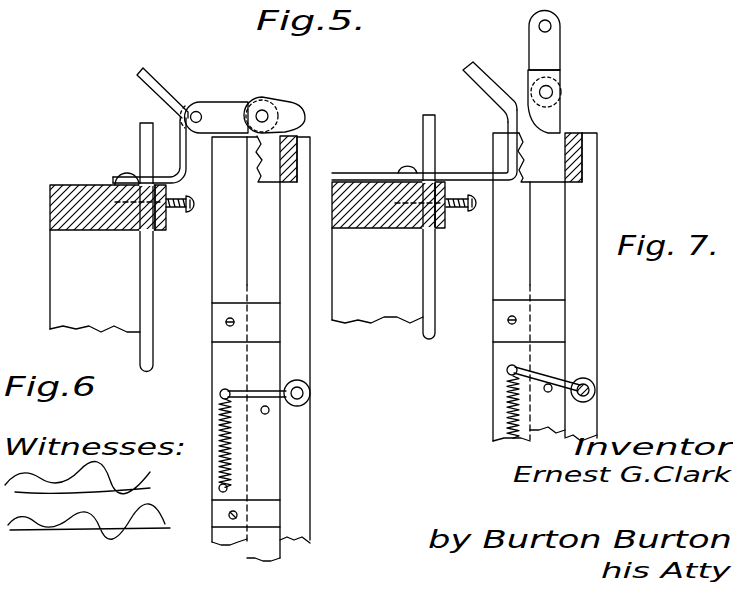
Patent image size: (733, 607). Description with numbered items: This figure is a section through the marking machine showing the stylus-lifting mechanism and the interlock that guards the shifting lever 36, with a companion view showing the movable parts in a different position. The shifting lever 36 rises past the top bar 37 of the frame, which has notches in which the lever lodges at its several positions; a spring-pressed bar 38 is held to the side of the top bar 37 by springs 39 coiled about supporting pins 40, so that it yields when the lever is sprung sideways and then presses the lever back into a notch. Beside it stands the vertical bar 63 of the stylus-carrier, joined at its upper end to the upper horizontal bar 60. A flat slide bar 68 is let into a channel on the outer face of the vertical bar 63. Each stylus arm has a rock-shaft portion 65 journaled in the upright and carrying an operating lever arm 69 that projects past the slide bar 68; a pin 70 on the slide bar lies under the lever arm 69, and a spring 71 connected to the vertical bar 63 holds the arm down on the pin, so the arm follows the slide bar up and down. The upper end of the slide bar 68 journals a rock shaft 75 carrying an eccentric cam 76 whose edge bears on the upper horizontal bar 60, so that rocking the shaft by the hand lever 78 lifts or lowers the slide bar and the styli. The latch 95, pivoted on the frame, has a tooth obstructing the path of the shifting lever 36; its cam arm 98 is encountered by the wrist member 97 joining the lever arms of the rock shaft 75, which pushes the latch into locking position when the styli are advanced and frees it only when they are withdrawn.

In FIG. 6, the shifting lever 36 is at (148, 364).
In FIG. 7, the shifting lever 36 is at (436, 323).
In FIG. 6, the top bar 37 is at (100, 226).
In FIG. 7, the top bar 37 is at (397, 222).
In FIG. 6, the spring-pressed bar 38 is at (161, 231).
In FIG. 7, the spring-pressed bar 38 is at (440, 230).
In FIG. 6, the springs 39 is at (178, 213).
In FIG. 7, the springs 39 is at (464, 213).
In FIG. 6, the supporting pins 40 is at (198, 203).
In FIG. 7, the supporting pins 40 is at (480, 207).
In FIG. 6, the upper horizontal bar 60 is at (297, 158).
In FIG. 7, the upper horizontal bar 60 is at (583, 160).
In FIG. 6, the vertical bar 63 is at (300, 468).
In FIG. 7, the vertical bar 63 is at (590, 310).
In FIG. 6, the rock-shaft portion 65 is at (301, 391).
In FIG. 7, the rock-shaft portion 65 is at (592, 385).
In FIG. 6, the slide bar 68 is at (253, 267).
In FIG. 7, the slide bar 68 is at (553, 212).
In FIG. 6, the operating lever arm 69 is at (256, 388).
In FIG. 6, the pin 70 is at (305, 415).
In FIG. 7, the pin 70 is at (552, 394).
In FIG. 6, the spring 71 is at (233, 455).
In FIG. 7, the spring 71 is at (507, 403).
In FIG. 6, the rock shaft 75 is at (267, 113).
In FIG. 7, the rock shaft 75 is at (553, 92).
In FIG. 6, the eccentric cam 76 is at (298, 115).
In FIG. 7, the eccentric cam 76 is at (552, 118).
In FIG. 6, the hand lever 78 is at (233, 107).
In FIG. 7, the hand lever 78 is at (552, 50).
In FIG. 6, the latch 95 is at (183, 160).
In FIG. 7, the latch 95 is at (383, 173).
In FIG. 6, the wrist member 97 is at (200, 112).
In FIG. 7, the wrist member 97 is at (551, 25).
In FIG. 6, the cam arm 98 is at (157, 90).
In FIG. 7, the cam arm 98 is at (472, 72).